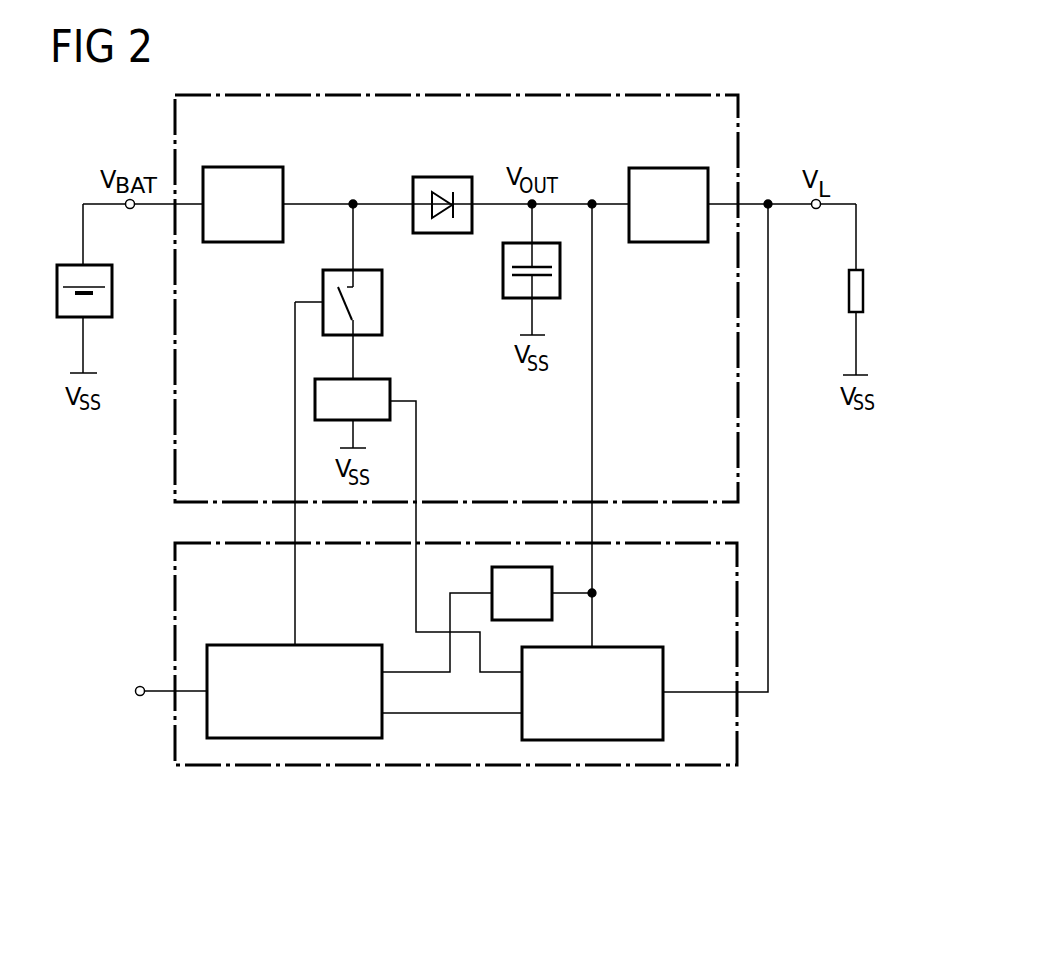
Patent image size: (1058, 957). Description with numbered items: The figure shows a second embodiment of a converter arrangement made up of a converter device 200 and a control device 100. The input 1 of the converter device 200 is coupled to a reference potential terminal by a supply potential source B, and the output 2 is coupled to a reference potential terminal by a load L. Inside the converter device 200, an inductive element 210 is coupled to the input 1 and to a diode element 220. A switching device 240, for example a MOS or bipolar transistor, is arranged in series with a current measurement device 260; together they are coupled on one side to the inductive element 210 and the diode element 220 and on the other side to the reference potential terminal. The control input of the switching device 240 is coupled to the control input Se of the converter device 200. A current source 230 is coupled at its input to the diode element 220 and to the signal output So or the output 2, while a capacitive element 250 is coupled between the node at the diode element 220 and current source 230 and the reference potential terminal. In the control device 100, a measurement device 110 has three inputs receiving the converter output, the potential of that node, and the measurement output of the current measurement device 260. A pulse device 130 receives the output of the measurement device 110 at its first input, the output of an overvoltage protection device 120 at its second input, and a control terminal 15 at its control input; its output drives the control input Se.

The converter device 200 is at (450, 95).
The control device 100 is at (428, 766).
The inductive element 210 is at (243, 167).
The diode element 220 is at (442, 177).
The current source 230 is at (668, 168).
The switching device 240 is at (382, 305).
The capacitive element 250 is at (503, 270).
The current measurement device 260 is at (392, 387).
The measurement device 110 is at (625, 647).
The overvoltage protection device 120 is at (492, 580).
The pulse device 130 is at (250, 645).
The control terminal 15 is at (140, 686).
The input 1 is at (130, 209).
The output 2 is at (816, 209).
The supply potential source B is at (112, 293).
The load L is at (849, 290).
The control input Se is at (293, 503).
The signal output So is at (742, 205).